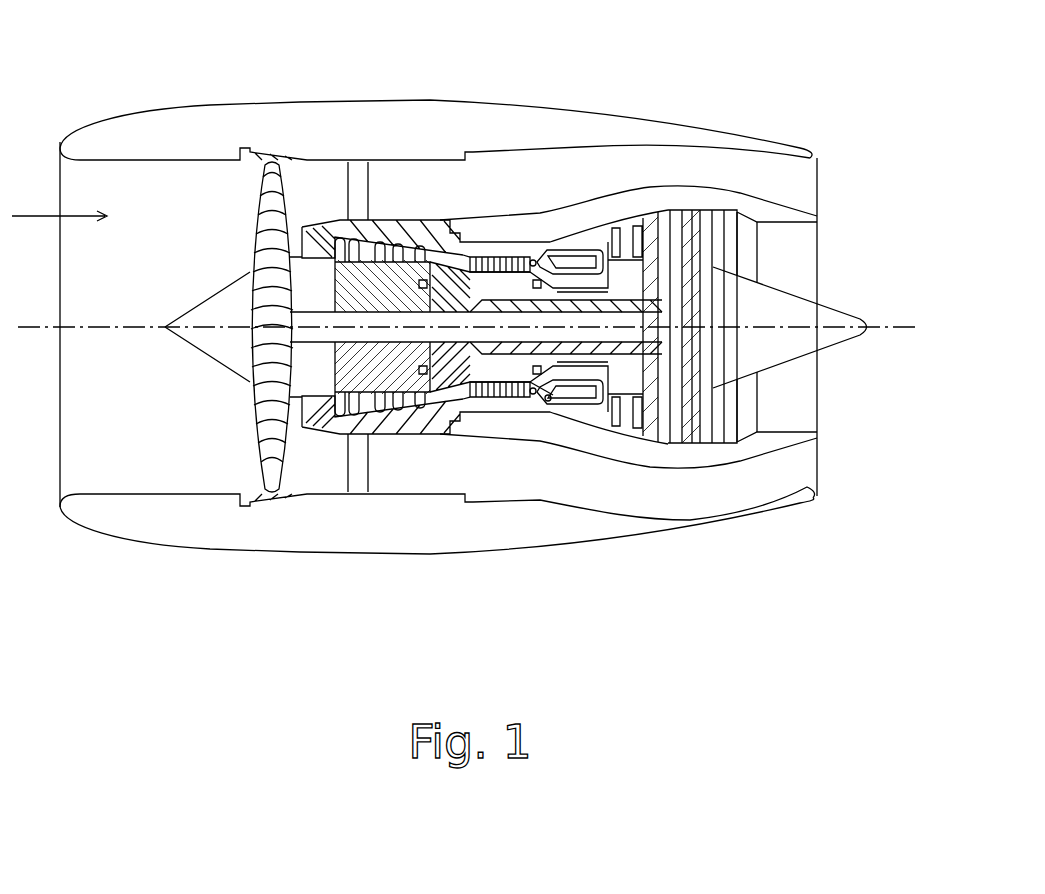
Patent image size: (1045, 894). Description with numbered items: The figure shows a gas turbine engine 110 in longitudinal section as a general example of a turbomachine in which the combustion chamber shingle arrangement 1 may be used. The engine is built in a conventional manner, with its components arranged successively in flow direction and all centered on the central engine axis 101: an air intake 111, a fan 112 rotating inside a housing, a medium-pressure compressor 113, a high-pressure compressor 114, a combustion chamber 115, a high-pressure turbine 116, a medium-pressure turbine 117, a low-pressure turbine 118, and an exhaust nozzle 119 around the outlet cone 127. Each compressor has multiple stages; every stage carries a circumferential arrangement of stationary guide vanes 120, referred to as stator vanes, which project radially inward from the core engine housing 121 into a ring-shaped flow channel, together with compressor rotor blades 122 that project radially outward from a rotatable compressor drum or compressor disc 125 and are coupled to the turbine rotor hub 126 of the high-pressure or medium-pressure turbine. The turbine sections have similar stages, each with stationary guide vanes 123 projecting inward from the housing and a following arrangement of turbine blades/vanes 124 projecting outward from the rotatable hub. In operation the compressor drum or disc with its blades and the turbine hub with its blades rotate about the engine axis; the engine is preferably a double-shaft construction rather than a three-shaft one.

The combustion chamber shingle arrangement 1 is at (549, 400).
The central engine axis 101 is at (133, 327).
The gas turbine engine 110 is at (612, 158).
The air intake 111 is at (219, 195).
The fan 112 is at (270, 172).
The medium-pressure compressor 113 is at (372, 273).
The high-pressure compressor 114 is at (488, 272).
The combustion chamber 115 is at (567, 258).
The high-pressure turbine 116 is at (612, 240).
The medium-pressure turbine 117 is at (650, 233).
The low-pressure turbine 118 is at (723, 210).
The exhaust nozzle 119 is at (747, 258).
The stationary guide vanes 120 is at (347, 417).
The core engine housing 121 is at (375, 436).
The compressor rotor blades 122 is at (400, 422).
The stationary guide vanes 123 is at (655, 425).
The turbine blades/vanes 124 is at (687, 425).
The compressor drum or compressor disc 125 is at (538, 370).
The turbine rotor hub 126 is at (613, 380).
The outlet cone 127 is at (813, 320).